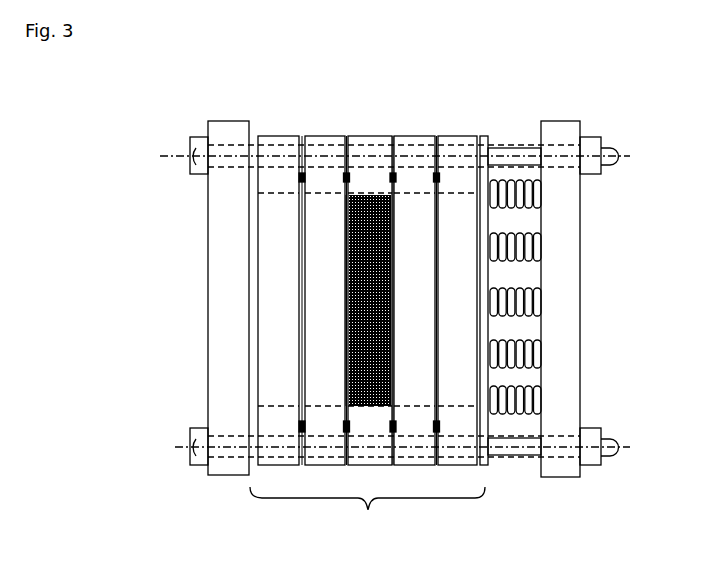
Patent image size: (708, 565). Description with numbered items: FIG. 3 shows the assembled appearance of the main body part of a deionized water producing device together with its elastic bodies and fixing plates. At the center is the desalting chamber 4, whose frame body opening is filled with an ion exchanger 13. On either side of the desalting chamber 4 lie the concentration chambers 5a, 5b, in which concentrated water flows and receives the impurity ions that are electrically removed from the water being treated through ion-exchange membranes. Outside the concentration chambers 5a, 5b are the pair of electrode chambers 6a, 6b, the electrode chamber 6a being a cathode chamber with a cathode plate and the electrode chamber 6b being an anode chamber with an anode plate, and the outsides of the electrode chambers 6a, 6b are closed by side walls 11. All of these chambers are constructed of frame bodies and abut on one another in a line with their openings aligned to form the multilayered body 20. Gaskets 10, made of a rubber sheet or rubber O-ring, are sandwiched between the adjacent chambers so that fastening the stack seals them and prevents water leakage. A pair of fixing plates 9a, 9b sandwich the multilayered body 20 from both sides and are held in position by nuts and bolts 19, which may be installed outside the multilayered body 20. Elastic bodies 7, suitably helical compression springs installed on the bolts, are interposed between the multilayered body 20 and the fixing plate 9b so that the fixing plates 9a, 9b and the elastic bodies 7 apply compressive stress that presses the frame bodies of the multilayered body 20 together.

The fixing plate 9a is at (222, 124).
The fixing plate 9b is at (575, 124).
The electrode chamber 6a is at (278, 176).
The electrode chamber 6b is at (458, 178).
The concentration chamber 5a is at (320, 182).
The concentration chamber 5b is at (406, 182).
The desalting chamber 4 is at (368, 178).
The side wall 11 is at (486, 158).
The bolt 19 is at (505, 152).
The elastic body 7 is at (527, 348).
The gasket 10 is at (436, 432).
The ion exchanger 13 is at (345, 343).
The multilayered body 20 is at (367, 521).